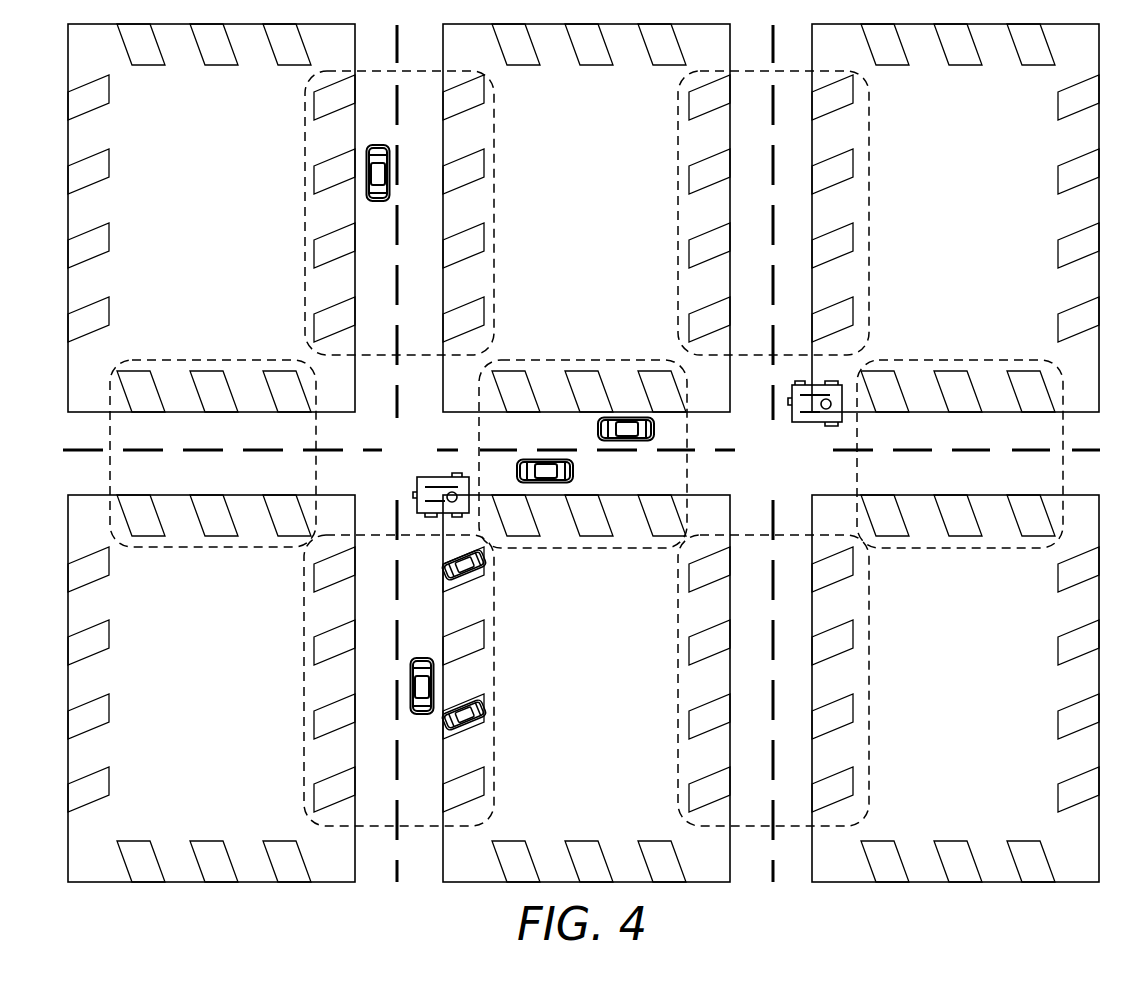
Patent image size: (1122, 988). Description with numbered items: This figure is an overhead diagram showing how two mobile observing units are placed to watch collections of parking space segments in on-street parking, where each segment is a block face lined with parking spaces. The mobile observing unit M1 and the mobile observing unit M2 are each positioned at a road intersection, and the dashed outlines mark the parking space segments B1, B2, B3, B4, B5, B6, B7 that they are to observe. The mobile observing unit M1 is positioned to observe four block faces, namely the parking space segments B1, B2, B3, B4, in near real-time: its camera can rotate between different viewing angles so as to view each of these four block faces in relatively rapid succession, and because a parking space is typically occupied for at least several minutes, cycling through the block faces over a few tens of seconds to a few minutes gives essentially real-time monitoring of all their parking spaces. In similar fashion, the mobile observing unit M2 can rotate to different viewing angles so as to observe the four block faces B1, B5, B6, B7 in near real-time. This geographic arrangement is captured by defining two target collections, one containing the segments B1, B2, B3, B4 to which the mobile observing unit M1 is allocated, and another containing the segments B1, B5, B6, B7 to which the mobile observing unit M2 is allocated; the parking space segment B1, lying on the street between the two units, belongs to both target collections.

The parking space segment B1 is at (593, 361).
The parking space segment B2 is at (303, 200).
The parking space segment B3 is at (192, 360).
The parking space segment B4 is at (305, 668).
The parking space segment B5 is at (678, 212).
The parking space segment B6 is at (678, 645).
The parking space segment B7 is at (973, 360).
The mobile observing unit M1 is at (430, 475).
The mobile observing unit M2 is at (810, 423).